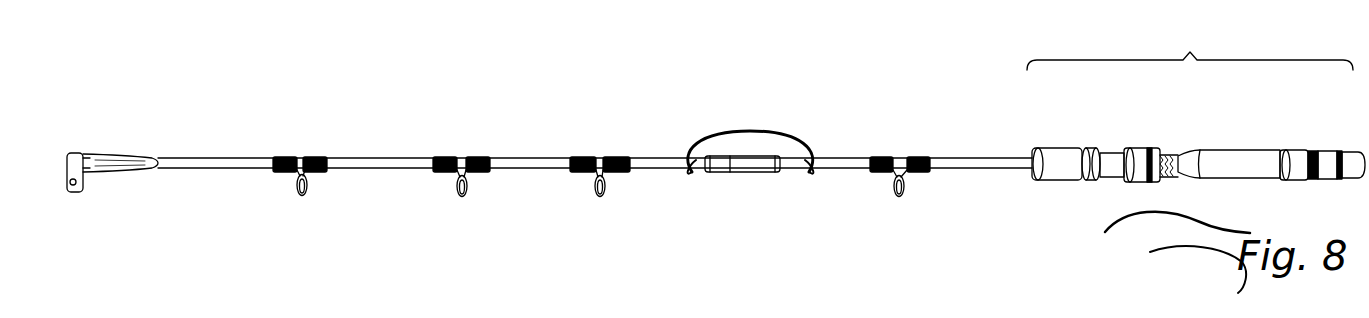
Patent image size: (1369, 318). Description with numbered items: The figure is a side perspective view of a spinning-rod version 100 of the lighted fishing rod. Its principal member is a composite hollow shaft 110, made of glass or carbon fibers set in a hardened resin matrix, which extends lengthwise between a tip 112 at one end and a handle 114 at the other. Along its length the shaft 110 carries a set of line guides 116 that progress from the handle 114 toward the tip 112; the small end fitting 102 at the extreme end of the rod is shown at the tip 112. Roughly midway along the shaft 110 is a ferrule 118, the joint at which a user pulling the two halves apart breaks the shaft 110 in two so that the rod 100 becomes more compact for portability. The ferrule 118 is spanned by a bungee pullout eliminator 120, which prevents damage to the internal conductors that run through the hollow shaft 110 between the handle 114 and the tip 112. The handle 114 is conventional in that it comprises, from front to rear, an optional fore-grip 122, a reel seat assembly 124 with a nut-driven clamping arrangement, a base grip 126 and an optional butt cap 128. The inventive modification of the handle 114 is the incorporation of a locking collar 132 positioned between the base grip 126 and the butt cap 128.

The spinning-rod version of the lighted fishing rod 100 is at (687, 75).
The rod tip 102 is at (84, 160).
The composite hollow shaft 110 is at (391, 162).
The tip 112 is at (121, 172).
The handle 114 is at (1190, 47).
The line guides 116 is at (307, 187).
The ferrule 118 is at (742, 170).
The bungee pullout eliminator 120 is at (778, 132).
The fore-grip 122 is at (1052, 152).
The reel seat assembly 124 is at (1123, 158).
The base grip 126 is at (1248, 157).
The butt cap 128 is at (1322, 152).
The locking collar 132 is at (1347, 152).